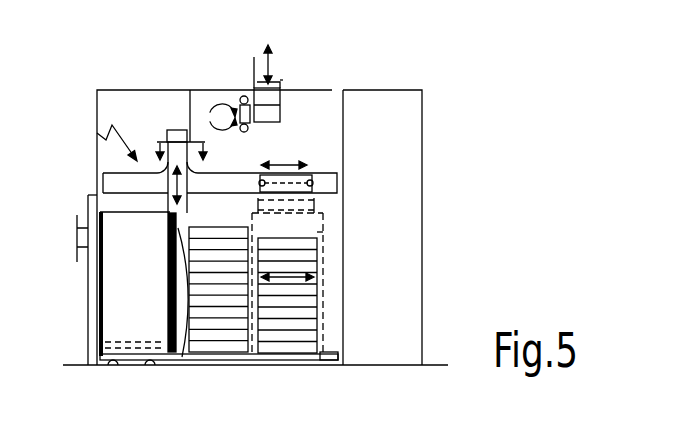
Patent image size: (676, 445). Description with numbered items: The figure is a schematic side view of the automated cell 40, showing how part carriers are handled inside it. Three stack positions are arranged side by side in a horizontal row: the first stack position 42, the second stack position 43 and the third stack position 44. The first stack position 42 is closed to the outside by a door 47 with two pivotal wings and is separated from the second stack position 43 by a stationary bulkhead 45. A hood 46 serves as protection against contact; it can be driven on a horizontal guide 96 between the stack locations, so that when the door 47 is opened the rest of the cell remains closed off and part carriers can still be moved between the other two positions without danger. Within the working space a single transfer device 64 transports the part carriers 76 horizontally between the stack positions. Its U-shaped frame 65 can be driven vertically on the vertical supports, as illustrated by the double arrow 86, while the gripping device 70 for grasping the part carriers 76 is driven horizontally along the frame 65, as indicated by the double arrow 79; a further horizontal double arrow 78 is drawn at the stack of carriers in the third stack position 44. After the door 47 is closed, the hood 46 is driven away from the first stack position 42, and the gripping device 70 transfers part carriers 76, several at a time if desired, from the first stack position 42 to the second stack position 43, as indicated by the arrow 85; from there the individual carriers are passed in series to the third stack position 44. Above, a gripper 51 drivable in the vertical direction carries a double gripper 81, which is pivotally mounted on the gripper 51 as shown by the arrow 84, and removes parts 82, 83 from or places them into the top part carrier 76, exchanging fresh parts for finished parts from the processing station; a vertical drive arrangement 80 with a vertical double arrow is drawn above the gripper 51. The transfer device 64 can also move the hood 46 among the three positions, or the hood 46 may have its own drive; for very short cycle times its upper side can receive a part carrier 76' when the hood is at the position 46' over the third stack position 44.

The automated cell 40 is at (432, 118).
The first stack position 42 is at (127, 367).
The second stack position 43 is at (213, 360).
The third stack position 44 is at (292, 352).
The stationary bulkhead 45 is at (183, 360).
The hood 46 is at (65, 187).
The hood position 46' is at (412, 210).
The door 47 is at (90, 302).
The gripper 51 is at (282, 82).
The transfer device 64 is at (97, 133).
The U-shaped frame 65 is at (167, 223).
The gripping device 70 is at (337, 173).
The part carrier 76 is at (243, 336).
The part carrier on hood 76' is at (382, 236).
The horizontal movement arrow 78 is at (290, 280).
The double arrow 79 is at (285, 160).
The drive unit 80 is at (281, 63).
The double gripper 81 is at (230, 107).
The part 82 is at (243, 96).
The part 83 is at (246, 133).
The arrow 84 is at (200, 100).
The arrow 85 is at (172, 130).
The double arrow 86 is at (167, 190).
The horizontal guide 96 is at (330, 360).